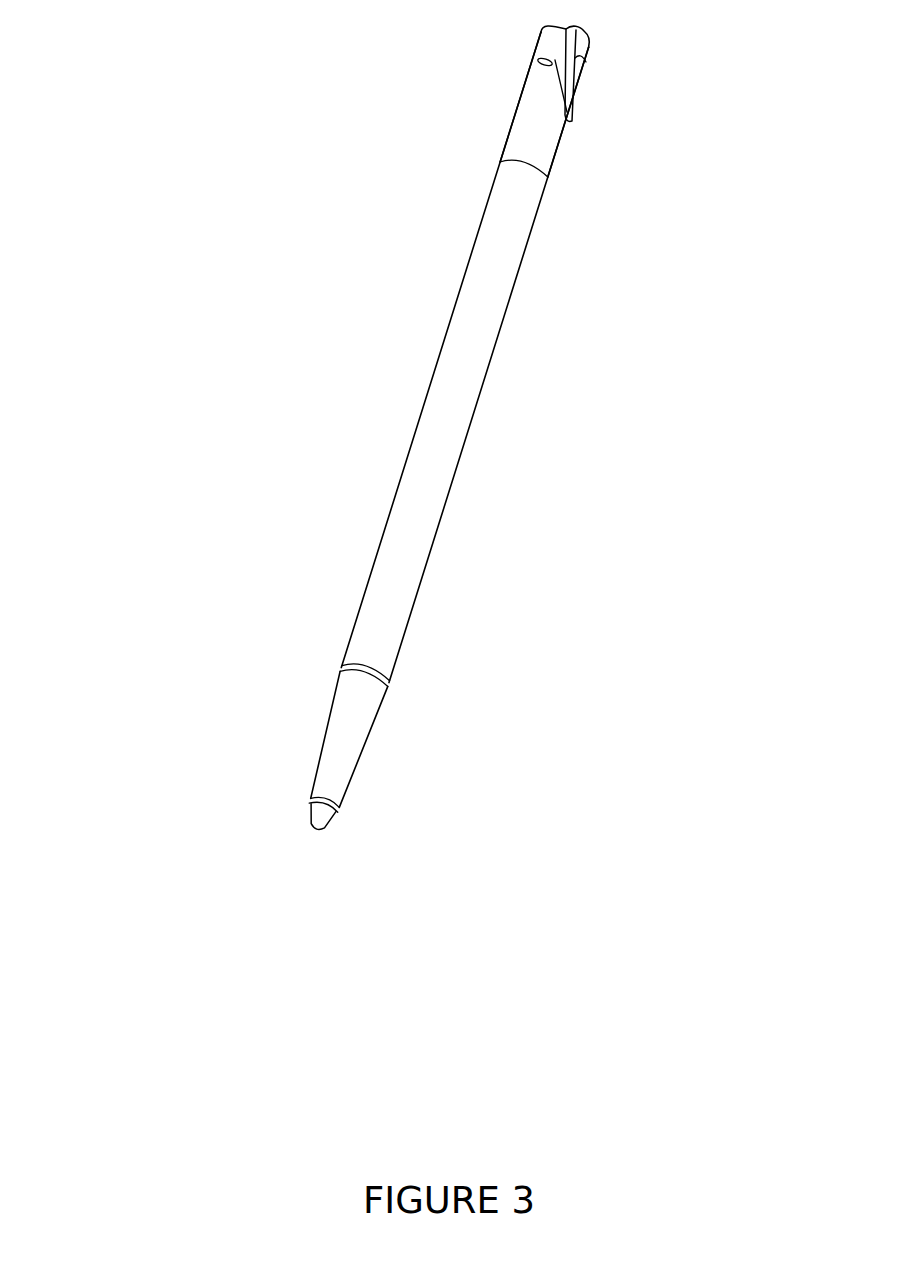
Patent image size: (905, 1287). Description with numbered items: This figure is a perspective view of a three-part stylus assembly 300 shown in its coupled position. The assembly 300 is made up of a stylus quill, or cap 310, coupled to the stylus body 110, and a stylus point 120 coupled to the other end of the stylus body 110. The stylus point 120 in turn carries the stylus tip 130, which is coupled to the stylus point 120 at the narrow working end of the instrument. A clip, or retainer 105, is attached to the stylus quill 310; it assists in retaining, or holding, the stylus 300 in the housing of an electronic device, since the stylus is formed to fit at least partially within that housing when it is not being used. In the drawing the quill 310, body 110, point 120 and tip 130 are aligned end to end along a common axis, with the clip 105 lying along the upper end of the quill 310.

The three-part stylus assembly 300 is at (290, 342).
The stylus quill 310 is at (521, 93).
The clip 105 is at (572, 90).
The stylus body 110 is at (463, 448).
The stylus point 120 is at (358, 742).
The stylus tip 130 is at (311, 814).